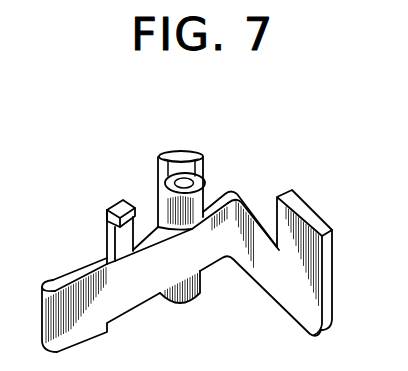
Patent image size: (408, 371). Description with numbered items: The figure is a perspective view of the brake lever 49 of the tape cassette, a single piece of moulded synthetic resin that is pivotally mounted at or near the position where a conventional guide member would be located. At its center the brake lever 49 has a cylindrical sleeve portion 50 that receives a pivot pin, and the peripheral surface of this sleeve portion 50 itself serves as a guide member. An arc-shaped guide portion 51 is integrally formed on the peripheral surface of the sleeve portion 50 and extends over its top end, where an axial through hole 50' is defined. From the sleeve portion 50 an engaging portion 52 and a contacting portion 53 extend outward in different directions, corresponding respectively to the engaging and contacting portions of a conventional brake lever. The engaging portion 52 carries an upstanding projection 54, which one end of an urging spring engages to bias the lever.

The brake lever 49 is at (273, 123).
The sleeve portion 50 is at (158, 229).
The axial through hole 50' is at (221, 172).
The arc-shaped guide portion 51 is at (184, 154).
The engaging portion 52 is at (133, 297).
The contacting portion 53 is at (322, 281).
The projection 54 is at (107, 219).